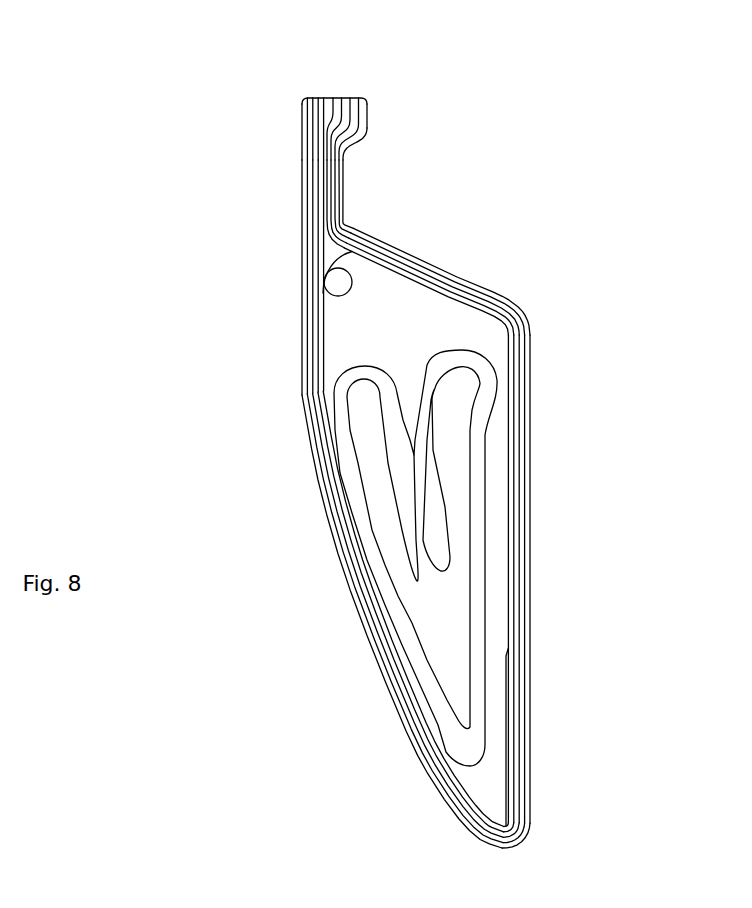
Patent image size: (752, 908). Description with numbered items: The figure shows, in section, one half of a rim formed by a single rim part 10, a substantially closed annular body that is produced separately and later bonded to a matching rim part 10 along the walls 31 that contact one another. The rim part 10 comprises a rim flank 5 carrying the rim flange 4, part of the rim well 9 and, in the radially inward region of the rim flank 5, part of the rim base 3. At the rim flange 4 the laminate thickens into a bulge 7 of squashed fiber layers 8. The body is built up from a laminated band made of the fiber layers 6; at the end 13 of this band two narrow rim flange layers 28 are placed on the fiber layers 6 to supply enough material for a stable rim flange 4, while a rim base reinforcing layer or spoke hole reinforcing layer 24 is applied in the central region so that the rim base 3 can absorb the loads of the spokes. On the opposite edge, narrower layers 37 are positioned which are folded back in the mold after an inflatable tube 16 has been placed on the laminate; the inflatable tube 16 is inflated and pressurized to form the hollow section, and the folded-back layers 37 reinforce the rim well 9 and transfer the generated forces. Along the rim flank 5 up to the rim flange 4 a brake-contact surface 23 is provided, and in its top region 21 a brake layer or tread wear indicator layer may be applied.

The rim base 3 is at (508, 851).
The rim flange 4 is at (300, 97).
The rim flank 5 is at (258, 352).
The fiber layers 6 is at (339, 177).
The bulge 7 is at (369, 99).
The squashed fiber layers 8 is at (368, 128).
The rim well 9 is at (480, 290).
The rim part 10 is at (366, 604).
The end 13 is at (358, 97).
The inflatable tube 16 is at (470, 437).
The top region 21 is at (258, 133).
The brake-contact surface 23 is at (303, 176).
The rim base reinforcing layer or spoke hole reinforcing layer 24 is at (504, 826).
The rim flange layers 28 is at (336, 97).
The walls 31 is at (531, 570).
The narrower layers 37 is at (323, 294).